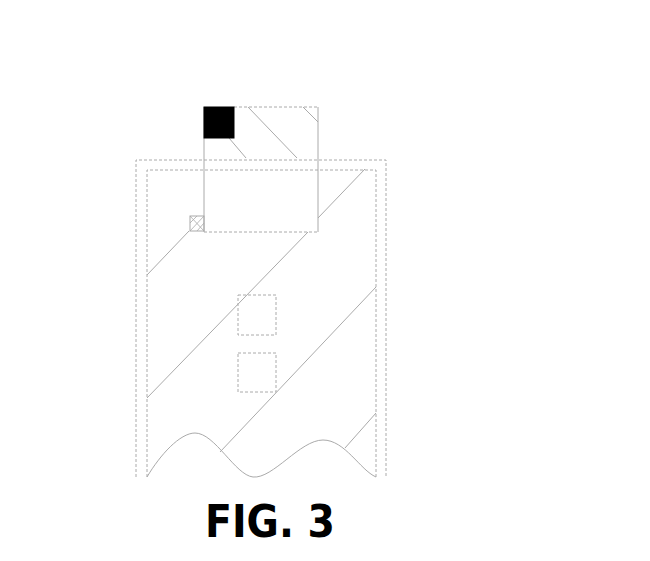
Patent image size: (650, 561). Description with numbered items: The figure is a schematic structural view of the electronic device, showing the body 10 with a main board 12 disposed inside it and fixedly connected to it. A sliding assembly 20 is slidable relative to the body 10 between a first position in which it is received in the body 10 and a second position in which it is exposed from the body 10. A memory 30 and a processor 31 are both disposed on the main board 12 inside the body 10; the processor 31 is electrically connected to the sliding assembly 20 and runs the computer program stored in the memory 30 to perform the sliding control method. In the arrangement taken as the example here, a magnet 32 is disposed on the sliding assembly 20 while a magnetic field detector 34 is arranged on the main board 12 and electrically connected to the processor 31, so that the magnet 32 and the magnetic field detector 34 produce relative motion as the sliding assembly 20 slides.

The body 10 is at (137, 325).
The main board 12 is at (376, 261).
The sliding assembly 20 is at (280, 136).
The memory 30 is at (253, 382).
The processor 31 is at (253, 313).
The magnet 32 is at (204, 108).
The magnetic field detector 34 is at (190, 217).